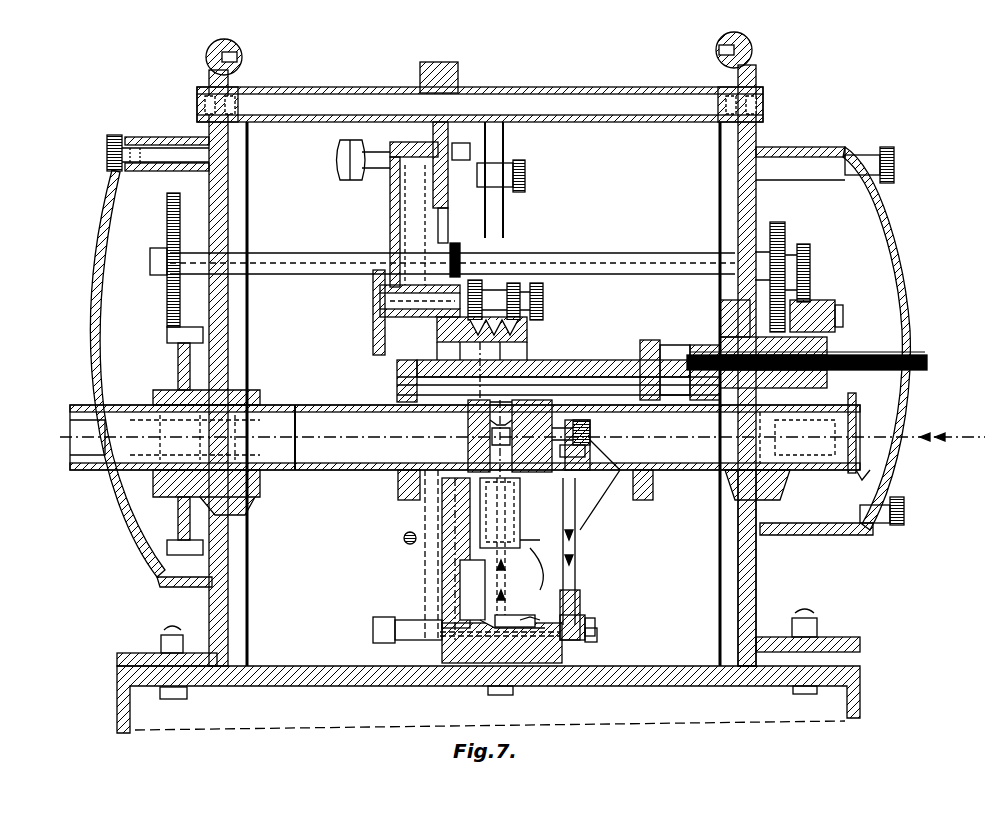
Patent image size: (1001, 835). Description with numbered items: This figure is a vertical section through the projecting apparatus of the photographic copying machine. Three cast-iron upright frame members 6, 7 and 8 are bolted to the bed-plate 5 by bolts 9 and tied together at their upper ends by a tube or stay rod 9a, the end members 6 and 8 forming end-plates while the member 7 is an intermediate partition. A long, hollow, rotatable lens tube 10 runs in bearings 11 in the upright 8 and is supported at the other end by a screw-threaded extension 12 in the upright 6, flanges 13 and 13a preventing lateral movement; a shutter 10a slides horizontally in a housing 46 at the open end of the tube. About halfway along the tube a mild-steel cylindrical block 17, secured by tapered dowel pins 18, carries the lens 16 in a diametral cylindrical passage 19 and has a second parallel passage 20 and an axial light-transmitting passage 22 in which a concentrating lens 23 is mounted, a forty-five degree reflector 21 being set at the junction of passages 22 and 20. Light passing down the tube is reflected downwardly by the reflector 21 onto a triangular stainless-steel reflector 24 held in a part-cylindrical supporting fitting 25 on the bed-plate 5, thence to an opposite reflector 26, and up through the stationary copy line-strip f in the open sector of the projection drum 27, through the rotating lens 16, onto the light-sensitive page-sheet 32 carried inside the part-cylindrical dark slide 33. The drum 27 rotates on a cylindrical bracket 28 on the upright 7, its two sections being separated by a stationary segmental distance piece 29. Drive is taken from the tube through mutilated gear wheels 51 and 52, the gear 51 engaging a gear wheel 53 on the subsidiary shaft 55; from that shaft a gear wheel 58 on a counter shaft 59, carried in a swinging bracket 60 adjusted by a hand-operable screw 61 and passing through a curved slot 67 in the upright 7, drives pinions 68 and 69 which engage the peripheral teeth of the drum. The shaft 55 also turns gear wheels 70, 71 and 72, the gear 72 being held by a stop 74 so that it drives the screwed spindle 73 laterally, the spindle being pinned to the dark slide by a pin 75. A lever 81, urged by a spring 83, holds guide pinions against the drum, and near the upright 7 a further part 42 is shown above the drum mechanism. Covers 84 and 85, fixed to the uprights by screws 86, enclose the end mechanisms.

The bed-plate 5 is at (600, 668).
The upright frame member 6 is at (242, 58).
The upright frame member 7 is at (448, 64).
The upright frame member 8 is at (753, 54).
The bolts 9 is at (162, 636).
The tube or stay rod 9a is at (560, 88).
The lens tube 10 is at (370, 400).
The shutter 10a is at (860, 440).
The bearings 11 is at (722, 480).
The extension 12 is at (255, 475).
The flange 13 is at (255, 402).
The flange 13a is at (775, 472).
The lens 16 is at (468, 435).
The cylindrical block 17 is at (560, 395).
The tapered dowel pins 18 is at (518, 512).
The cylindrical passage 19 is at (405, 495).
The cylindrical passage 20 is at (625, 420).
The reflector 21 is at (575, 470).
The light-transmitting passage 22 is at (592, 424).
The lens 23 is at (588, 448).
The reflector 24 is at (572, 618).
The supporting fitting 25 is at (545, 660).
The reflector 26 is at (490, 650).
The projection drum 27 is at (545, 298).
The cylindrical bracket 28 is at (527, 333).
The segmental distance piece 29 is at (437, 340).
The light-sensitive page-sheet 32 is at (605, 355).
The dark slide 33 is at (650, 352).
The adjusting screw 42 is at (506, 150).
The housing 46 is at (862, 465).
The mutilated gear wheel 51 is at (168, 335).
The mutilated gear wheel 52 is at (178, 362).
The gear wheel 53 is at (167, 232).
The subsidiary shaft 55 is at (300, 265).
The gear wheel 58 is at (373, 340).
The counter shaft 59 is at (395, 305).
The swinging bracket 60 is at (390, 200).
The hand-operable screw 61 is at (340, 158).
The curved slot 67 is at (485, 226).
The pinion 68 is at (480, 292).
The pinion 69 is at (520, 295).
The gear wheel 70 is at (786, 235).
The intermediate gear wheel 71 is at (810, 288).
The gear wheel 72 is at (838, 316).
The screwed spindle 73 is at (918, 358).
The stop 74 is at (825, 375).
The pin 75 is at (665, 345).
The lever 81 is at (425, 572).
The spring 83 is at (403, 540).
The cover 84 is at (103, 240).
The cover 85 is at (905, 268).
The screws 86 is at (112, 170).
The copy line-strip f is at (531, 565).